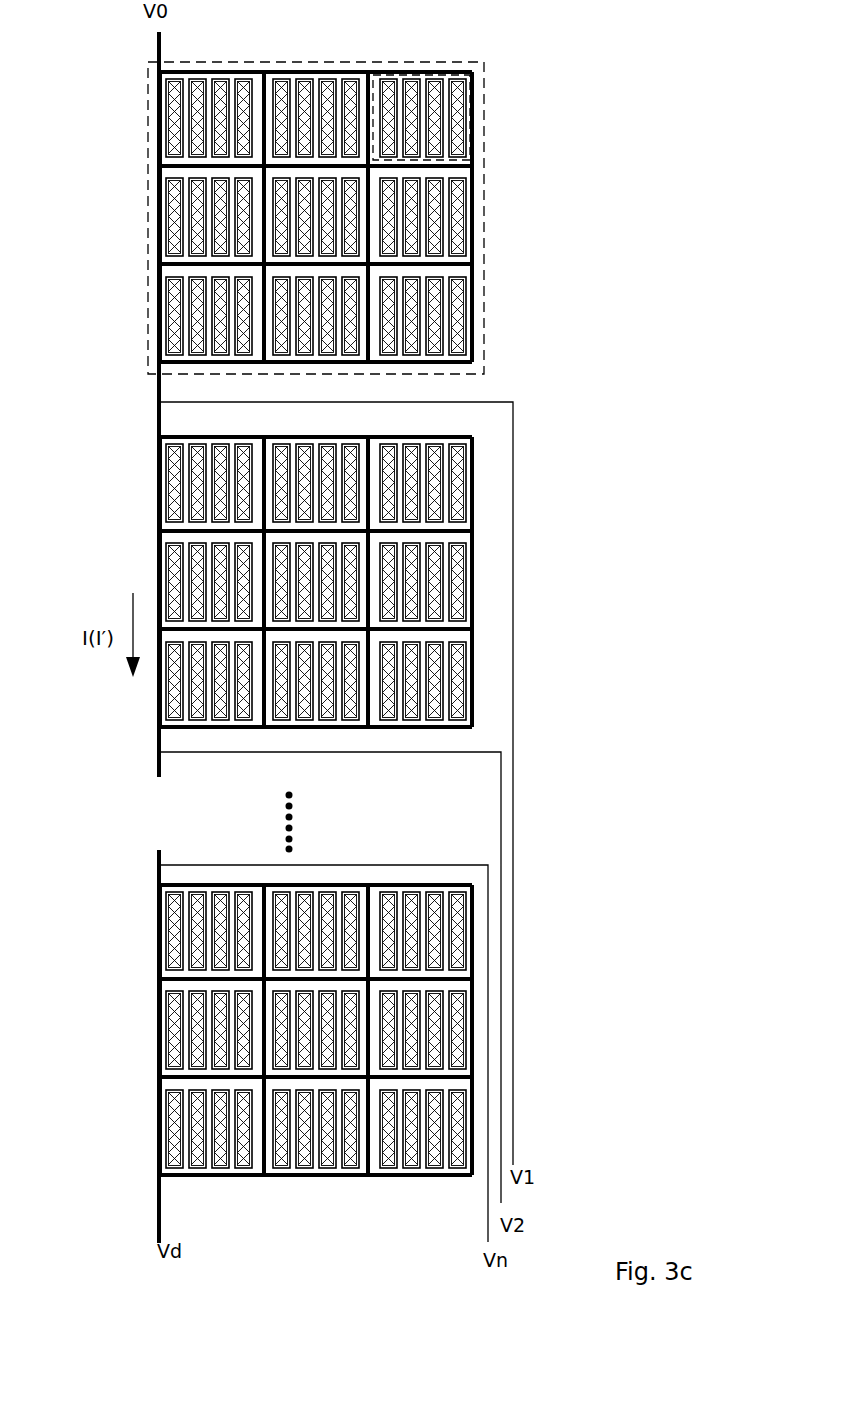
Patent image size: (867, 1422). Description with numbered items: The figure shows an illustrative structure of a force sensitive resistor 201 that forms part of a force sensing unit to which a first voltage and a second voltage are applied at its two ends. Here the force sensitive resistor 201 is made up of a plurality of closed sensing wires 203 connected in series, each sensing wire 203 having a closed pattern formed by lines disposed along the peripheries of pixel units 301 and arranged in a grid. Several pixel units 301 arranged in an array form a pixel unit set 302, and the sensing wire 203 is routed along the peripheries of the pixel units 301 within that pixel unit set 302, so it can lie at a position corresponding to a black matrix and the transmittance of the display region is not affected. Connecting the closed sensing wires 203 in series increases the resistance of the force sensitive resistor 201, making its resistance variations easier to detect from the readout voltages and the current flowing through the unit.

The force sensitive resistor 201 is at (148, 193).
The sensing wire 203 is at (473, 283).
The pixel unit 301 is at (457, 120).
The pixel unit set 302 is at (462, 160).